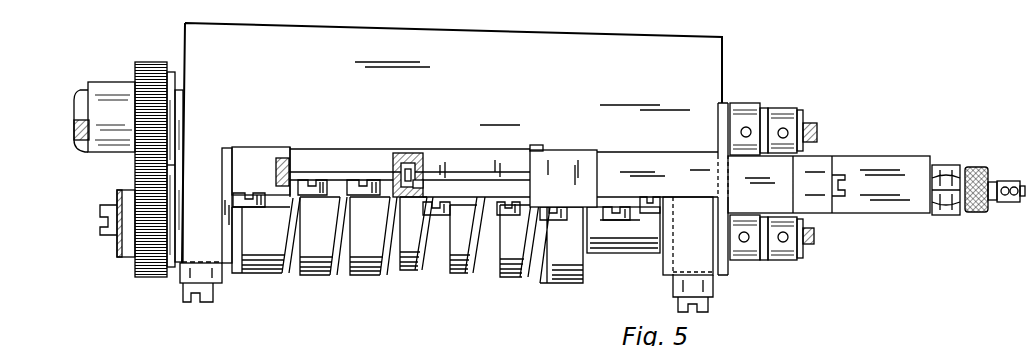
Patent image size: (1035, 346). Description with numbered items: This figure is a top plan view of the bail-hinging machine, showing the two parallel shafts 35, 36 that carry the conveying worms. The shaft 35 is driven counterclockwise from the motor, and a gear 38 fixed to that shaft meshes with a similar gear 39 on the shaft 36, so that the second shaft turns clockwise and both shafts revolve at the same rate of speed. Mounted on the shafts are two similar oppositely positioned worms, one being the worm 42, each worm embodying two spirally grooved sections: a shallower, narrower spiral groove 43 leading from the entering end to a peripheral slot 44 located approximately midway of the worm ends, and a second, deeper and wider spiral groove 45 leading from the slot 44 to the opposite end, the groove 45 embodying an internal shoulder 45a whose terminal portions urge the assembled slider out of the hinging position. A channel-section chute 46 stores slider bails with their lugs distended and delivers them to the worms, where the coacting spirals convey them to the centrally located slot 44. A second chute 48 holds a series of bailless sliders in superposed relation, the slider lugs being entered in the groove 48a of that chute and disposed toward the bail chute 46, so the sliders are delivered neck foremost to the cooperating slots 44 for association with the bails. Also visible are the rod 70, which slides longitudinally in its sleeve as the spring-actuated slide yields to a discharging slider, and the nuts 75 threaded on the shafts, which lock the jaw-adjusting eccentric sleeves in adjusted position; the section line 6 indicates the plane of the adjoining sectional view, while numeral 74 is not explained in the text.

The section line 6- 6 is at (88, 165).
The shaft 35 is at (118, 82).
The shaft 36 is at (125, 190).
The gear 38 is at (153, 68).
The gear 39 is at (148, 280).
The worm 42 is at (268, 272).
The spiral groove 43 is at (326, 275).
The peripheral slot 44 is at (405, 273).
The second spiral groove 45 is at (502, 277).
The internal shoulder 45a is at (442, 272).
The chute 46 is at (278, 175).
The second chute 48 is at (420, 155).
The groove 48a is at (399, 155).
The rod 70 is at (738, 107).
The bearing block 74 is at (764, 112).
The nut 75 is at (799, 110).